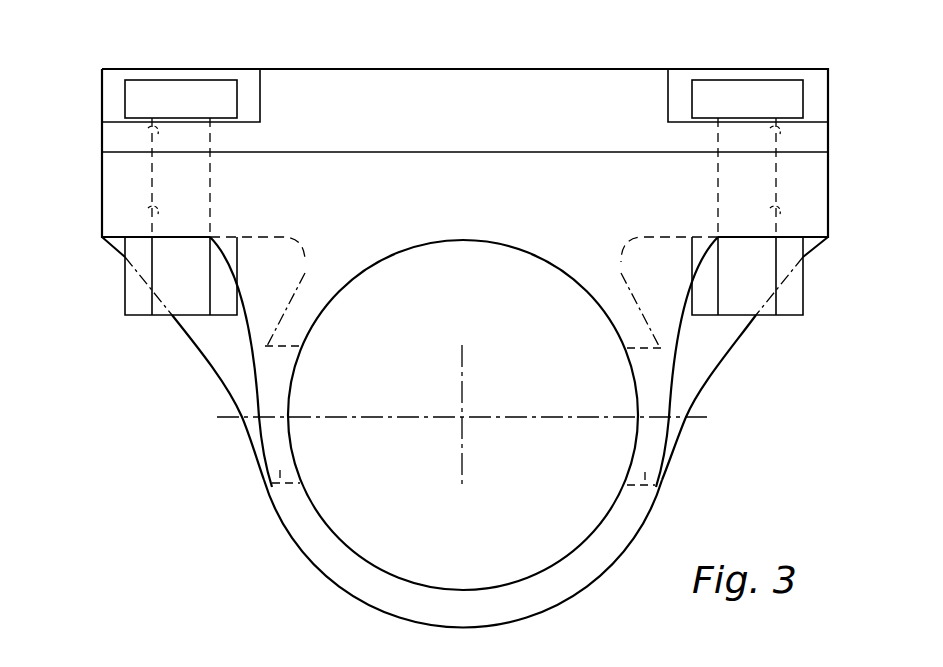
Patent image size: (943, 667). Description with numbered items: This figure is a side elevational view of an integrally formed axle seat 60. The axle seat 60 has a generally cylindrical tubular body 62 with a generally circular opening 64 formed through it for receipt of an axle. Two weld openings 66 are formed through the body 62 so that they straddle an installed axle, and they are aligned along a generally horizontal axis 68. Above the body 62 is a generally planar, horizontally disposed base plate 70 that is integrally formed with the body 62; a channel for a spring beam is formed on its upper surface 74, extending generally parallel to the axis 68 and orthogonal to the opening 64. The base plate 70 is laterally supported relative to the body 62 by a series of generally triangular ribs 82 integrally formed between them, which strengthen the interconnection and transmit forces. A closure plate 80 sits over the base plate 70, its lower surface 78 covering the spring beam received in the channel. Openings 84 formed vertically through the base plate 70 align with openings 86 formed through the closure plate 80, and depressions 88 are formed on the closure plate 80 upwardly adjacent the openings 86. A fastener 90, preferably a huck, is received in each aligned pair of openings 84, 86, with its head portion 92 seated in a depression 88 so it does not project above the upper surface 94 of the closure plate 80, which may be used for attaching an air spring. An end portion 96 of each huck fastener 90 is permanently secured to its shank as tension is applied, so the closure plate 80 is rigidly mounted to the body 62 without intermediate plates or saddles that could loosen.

The axle seat 60 is at (177, 560).
The tubular body 62 is at (328, 575).
The opening 64 is at (546, 573).
The weld openings 66 is at (300, 476).
The horizontal axis 68 is at (523, 416).
The base plate 70 is at (828, 195).
The upper surface 74 is at (828, 178).
The lower surface 78 is at (102, 192).
The closure plate 80 is at (457, 69).
The ribs 82 is at (257, 346).
The openings 84 is at (150, 210).
The openings 86 is at (150, 132).
The depressions 88 is at (104, 122).
The fastener 90 is at (165, 78).
The head portion 92 is at (228, 80).
The upper surface 94 is at (378, 69).
The end portion 96 is at (125, 290).